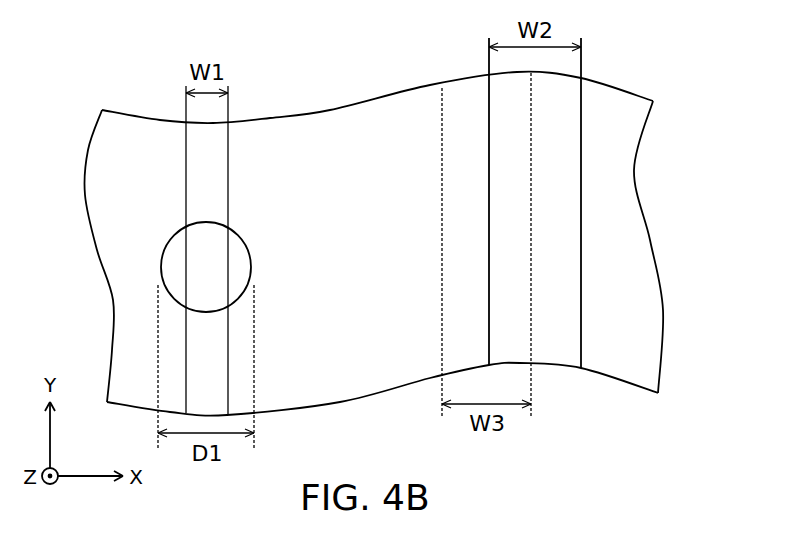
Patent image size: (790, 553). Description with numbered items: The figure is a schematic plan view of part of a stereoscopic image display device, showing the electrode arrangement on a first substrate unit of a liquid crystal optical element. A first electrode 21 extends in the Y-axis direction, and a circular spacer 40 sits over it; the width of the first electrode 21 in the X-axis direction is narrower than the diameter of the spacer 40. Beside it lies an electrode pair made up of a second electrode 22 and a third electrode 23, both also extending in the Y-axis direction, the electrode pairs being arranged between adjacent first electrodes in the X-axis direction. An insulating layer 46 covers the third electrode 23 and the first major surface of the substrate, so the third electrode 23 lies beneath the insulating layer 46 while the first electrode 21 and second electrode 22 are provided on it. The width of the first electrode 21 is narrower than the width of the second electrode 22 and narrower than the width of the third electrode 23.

The first electrode 21 is at (210, 175).
The second electrode 22 is at (565, 338).
The third electrode 23 is at (462, 110).
The spacer 40 is at (232, 262).
The insulating layer 46 is at (343, 137).